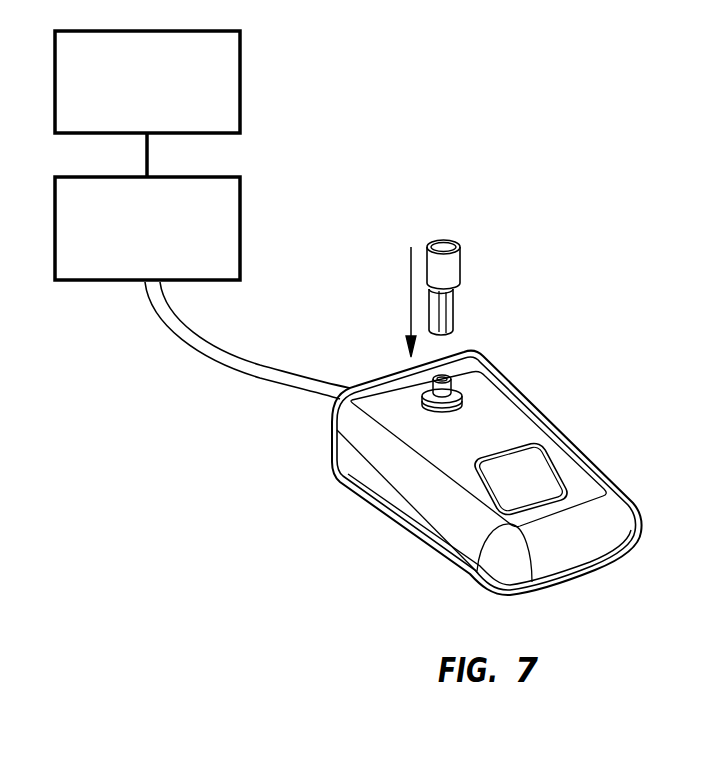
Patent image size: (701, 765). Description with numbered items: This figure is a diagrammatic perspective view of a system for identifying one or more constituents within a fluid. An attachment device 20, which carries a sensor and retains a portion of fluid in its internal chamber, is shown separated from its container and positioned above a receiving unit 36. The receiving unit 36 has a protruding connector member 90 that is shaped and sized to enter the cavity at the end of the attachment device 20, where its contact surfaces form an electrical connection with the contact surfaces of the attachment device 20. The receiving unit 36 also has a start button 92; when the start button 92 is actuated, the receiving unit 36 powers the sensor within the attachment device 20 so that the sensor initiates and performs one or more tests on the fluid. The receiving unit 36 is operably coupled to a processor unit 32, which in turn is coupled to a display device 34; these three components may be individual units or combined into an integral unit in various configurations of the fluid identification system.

The attachment device 20 is at (455, 265).
The processor unit 32 is at (230, 229).
The display device 34 is at (230, 78).
The receiving unit 36 is at (511, 462).
The protruding connector member 90 is at (448, 379).
The start button 92 is at (535, 453).